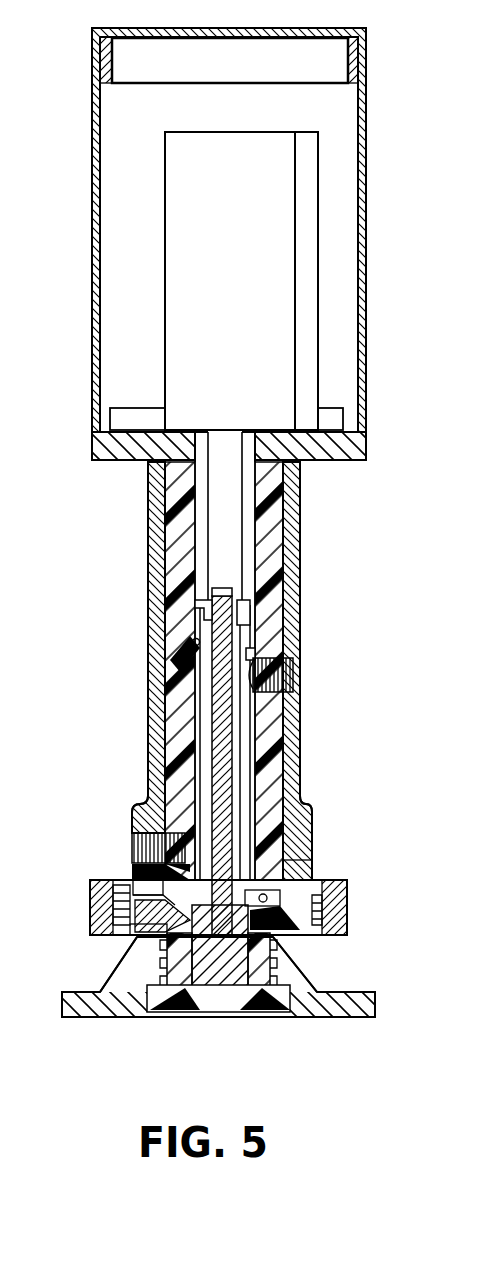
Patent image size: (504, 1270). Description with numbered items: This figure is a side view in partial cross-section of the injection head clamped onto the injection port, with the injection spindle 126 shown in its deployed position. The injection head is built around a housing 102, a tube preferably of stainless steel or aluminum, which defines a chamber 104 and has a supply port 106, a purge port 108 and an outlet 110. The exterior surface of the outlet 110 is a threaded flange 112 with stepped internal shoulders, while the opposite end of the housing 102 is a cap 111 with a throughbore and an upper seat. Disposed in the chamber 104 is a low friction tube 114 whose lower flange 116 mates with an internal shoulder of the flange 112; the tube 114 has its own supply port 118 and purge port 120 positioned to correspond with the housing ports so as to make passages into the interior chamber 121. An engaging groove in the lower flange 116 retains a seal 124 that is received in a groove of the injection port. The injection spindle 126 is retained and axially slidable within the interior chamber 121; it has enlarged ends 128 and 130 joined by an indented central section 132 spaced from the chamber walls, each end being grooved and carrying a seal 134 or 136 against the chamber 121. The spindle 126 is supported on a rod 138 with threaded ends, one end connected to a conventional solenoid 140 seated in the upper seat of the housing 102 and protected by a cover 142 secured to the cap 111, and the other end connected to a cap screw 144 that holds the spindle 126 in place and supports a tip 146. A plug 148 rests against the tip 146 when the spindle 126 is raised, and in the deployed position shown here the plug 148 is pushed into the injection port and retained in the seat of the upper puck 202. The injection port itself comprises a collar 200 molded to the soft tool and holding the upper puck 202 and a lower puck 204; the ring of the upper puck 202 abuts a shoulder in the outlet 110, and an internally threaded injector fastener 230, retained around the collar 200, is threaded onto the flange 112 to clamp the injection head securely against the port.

The housing 102 is at (300, 542).
The chamber 104 is at (175, 538).
The supply port 106 is at (132, 833).
The purge port 108 is at (292, 672).
The outlet 110 is at (132, 877).
The cap 111 is at (343, 461).
The threaded flange 112 is at (317, 877).
The tube 114 is at (262, 618).
The lower flange 116 is at (293, 867).
The supply port 118 is at (270, 660).
The purge port 120 is at (158, 805).
The interior chamber 121 is at (200, 484).
The seal 124 is at (140, 930).
The injection spindle 126 is at (232, 778).
The enlarged end 128 is at (150, 890).
The enlarged end 130 is at (200, 617).
The indented central section 132 is at (197, 696).
The seal 134 is at (282, 843).
The seal 136 is at (192, 642).
The rod 138 is at (225, 722).
The solenoid 140 is at (178, 302).
The cover 142 is at (93, 216).
The cap screw 144 is at (273, 957).
The tip 146 is at (212, 967).
The plug 148 is at (227, 1003).
The collar 200 is at (100, 1007).
The upper puck 202 is at (348, 923).
The lower puck 204 is at (275, 1000).
The injector fastener 230 is at (340, 888).